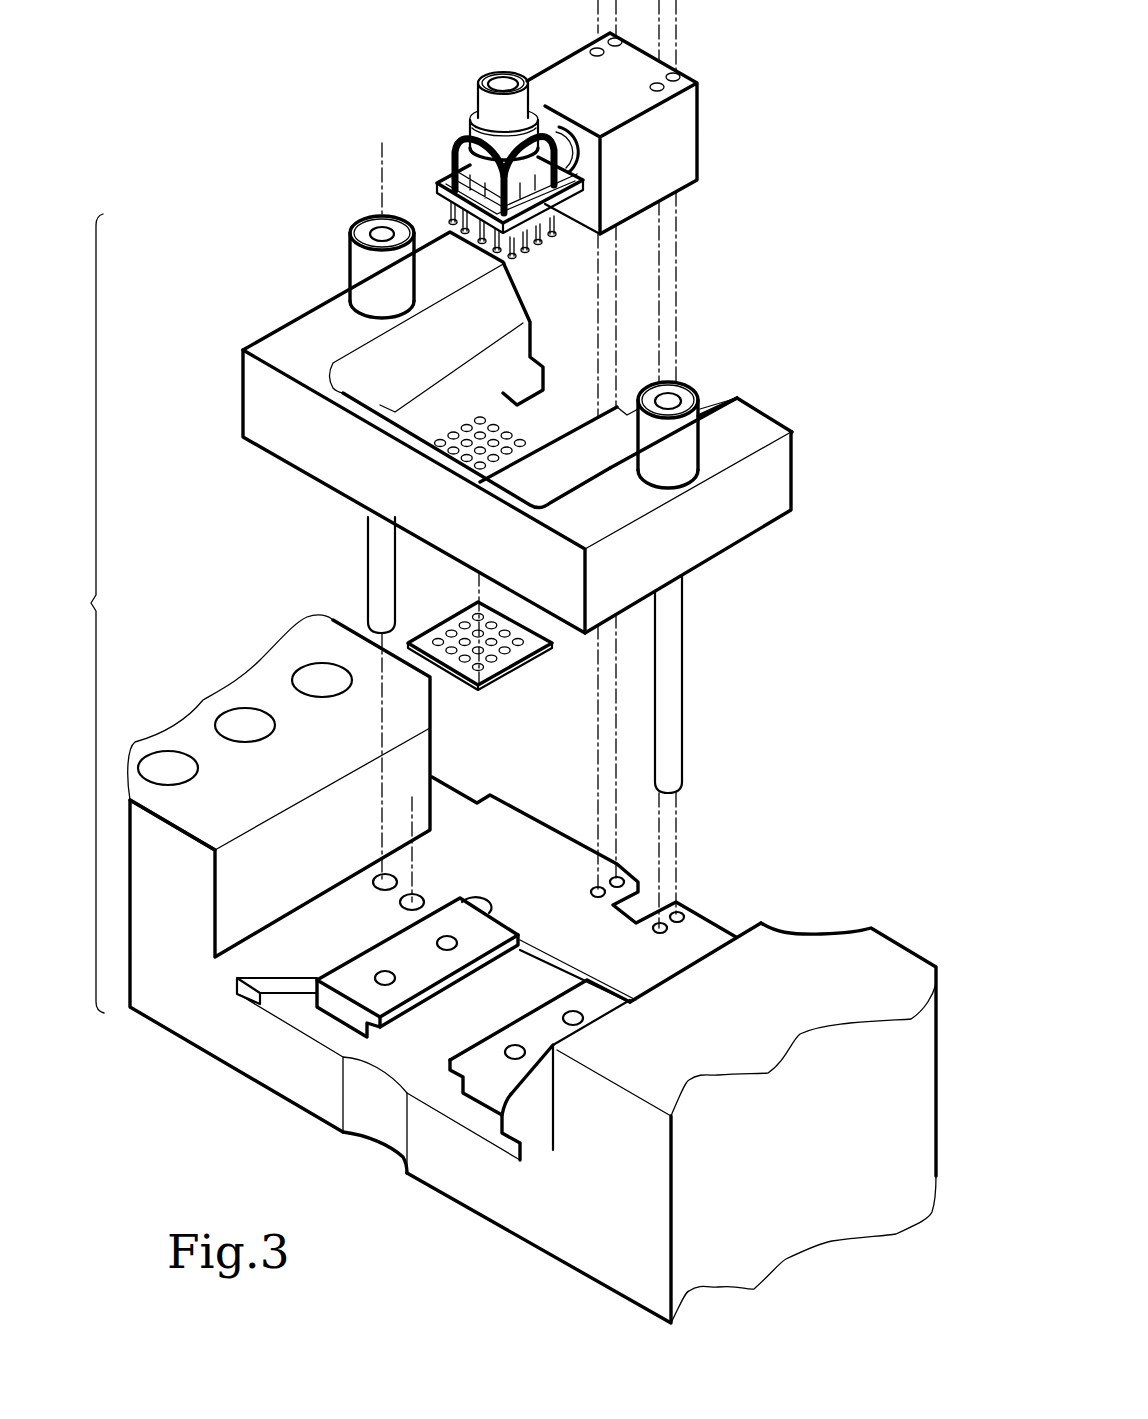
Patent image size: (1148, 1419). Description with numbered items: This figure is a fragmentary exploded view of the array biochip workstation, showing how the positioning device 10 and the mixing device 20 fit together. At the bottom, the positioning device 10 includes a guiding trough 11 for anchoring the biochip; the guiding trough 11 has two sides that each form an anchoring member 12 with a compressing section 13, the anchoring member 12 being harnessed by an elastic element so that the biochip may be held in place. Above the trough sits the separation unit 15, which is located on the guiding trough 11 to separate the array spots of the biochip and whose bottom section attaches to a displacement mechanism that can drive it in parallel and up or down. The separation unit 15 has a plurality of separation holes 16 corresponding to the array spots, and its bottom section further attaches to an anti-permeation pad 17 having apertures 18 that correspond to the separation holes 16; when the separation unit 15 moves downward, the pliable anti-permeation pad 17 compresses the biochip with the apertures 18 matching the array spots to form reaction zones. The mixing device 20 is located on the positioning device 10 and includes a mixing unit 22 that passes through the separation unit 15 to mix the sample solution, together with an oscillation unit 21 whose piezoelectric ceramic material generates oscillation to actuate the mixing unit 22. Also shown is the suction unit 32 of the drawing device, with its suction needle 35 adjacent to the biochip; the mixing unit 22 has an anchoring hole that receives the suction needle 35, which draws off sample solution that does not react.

The positioning device 10 is at (78, 613).
The guiding trough 11 is at (277, 967).
The anchoring member 12 is at (320, 998).
The compressing section 13 is at (453, 1077).
The separation unit 15 is at (730, 568).
The separation holes 16 is at (437, 430).
The anti-permeation pad 17 is at (499, 686).
The apertures 18 is at (502, 657).
The mixing device 20 is at (556, 80).
The oscillation unit 21 is at (672, 147).
The mixing unit 22 is at (577, 211).
The suction unit 32 is at (470, 113).
The suction needle 35 is at (447, 218).